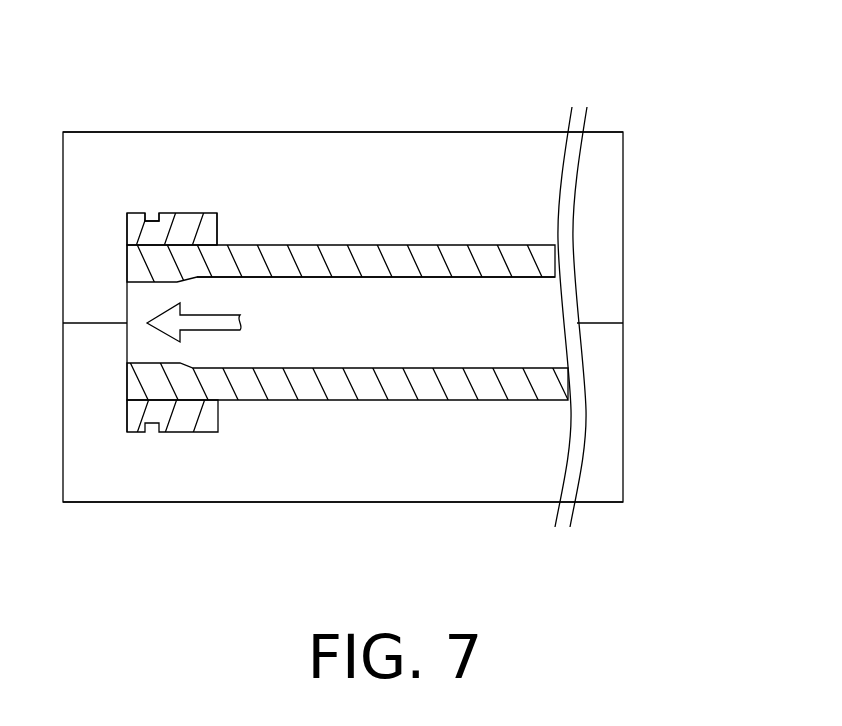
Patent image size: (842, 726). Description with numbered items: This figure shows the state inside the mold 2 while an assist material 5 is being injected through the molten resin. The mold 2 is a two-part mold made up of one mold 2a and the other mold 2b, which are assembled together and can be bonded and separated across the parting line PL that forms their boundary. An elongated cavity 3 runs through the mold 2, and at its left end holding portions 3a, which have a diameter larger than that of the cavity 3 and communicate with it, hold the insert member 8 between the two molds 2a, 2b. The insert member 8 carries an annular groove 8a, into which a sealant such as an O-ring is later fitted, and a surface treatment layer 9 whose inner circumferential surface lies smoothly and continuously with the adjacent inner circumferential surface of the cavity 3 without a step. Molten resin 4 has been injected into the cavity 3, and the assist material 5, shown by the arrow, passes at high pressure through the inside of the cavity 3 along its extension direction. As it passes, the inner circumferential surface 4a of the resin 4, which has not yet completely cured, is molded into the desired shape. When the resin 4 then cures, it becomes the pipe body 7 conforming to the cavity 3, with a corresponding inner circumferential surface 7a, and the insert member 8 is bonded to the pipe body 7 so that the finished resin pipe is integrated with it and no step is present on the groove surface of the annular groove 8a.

The mold 2 is at (462, 132).
The one mold 2a is at (605, 212).
The other mold 2b is at (613, 410).
The parting line PL is at (623, 323).
The cavity 3 is at (268, 386).
The holding portion 3a is at (212, 414).
The resin 4 is at (341, 229).
The pipe body 7 is at (350, 257).
The inner circumferential surface of the resin 4a is at (376, 315).
The inner circumferential surface of the pipe body 7a is at (483, 278).
The assist material 5 is at (243, 323).
The insert member 8 is at (170, 220).
The annular groove 8a is at (152, 212).
The surface treatment layer 9 is at (213, 236).